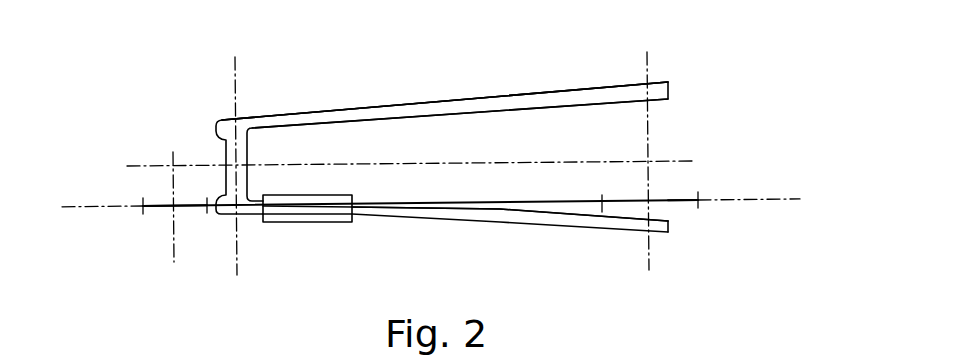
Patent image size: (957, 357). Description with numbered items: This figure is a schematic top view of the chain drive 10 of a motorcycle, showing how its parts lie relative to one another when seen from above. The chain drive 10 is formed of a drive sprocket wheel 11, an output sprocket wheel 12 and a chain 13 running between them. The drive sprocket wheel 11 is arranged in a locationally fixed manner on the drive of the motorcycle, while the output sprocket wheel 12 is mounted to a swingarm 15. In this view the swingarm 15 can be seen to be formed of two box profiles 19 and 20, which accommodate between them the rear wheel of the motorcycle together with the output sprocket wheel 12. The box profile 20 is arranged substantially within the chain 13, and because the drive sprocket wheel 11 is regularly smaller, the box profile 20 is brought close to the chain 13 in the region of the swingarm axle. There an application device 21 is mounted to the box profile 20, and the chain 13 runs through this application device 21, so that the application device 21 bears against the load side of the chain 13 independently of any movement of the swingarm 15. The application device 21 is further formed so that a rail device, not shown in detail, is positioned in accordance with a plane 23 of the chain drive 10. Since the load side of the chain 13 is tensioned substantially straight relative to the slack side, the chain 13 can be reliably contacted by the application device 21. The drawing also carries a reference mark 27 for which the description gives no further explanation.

The chain drive 10 is at (683, 190).
The drive sprocket wheel 11 is at (160, 207).
The output sprocket wheel 12 is at (680, 200).
The chain 13 is at (533, 204).
The swingarm 15 is at (556, 90).
The box profile 19 is at (455, 107).
The box profile 20 is at (492, 220).
The application device 21 is at (305, 226).
The plane 23 is at (765, 200).
The reference mark 27 is at (166, 339).